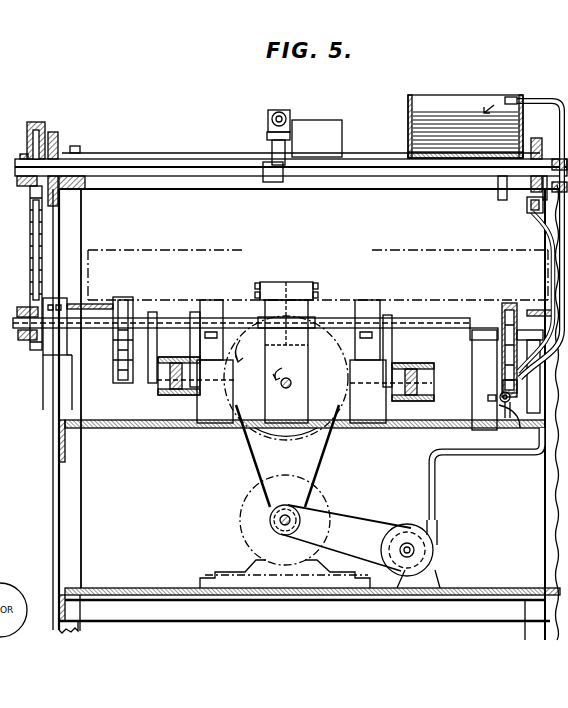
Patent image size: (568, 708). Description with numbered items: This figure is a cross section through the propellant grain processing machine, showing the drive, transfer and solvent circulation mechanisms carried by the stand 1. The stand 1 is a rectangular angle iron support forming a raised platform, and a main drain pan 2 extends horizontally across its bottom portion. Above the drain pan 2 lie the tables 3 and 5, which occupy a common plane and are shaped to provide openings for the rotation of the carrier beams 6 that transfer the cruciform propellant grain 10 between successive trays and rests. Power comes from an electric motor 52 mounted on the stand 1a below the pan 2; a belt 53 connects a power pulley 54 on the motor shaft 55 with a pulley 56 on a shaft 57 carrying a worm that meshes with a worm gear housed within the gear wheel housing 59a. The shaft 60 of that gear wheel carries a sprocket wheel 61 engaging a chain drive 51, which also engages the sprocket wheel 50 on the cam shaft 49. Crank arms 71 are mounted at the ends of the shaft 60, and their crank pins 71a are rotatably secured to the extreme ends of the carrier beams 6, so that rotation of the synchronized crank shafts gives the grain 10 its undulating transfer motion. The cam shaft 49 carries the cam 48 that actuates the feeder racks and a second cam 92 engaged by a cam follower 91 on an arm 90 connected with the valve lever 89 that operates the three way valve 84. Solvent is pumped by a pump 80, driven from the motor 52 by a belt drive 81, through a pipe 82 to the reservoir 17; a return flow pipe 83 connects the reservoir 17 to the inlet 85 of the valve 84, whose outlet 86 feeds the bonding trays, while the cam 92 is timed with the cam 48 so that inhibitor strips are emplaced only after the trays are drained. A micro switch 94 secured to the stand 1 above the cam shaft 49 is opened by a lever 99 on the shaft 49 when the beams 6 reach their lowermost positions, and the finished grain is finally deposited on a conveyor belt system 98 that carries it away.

The stand 1 is at (51, 445).
The stand 1a is at (140, 586).
The main drain pan 2 is at (165, 429).
The table 3 is at (101, 304).
The table 5 is at (536, 309).
The carrier beams 6 is at (183, 357).
The propellant grain 10 is at (383, 263).
The reservoir 17 is at (408, 110).
The cam 48 is at (57, 133).
The shaft 49 is at (143, 164).
The sprocket wheel 50 is at (24, 187).
The chain drive 51 is at (30, 230).
The electric motor 52 is at (250, 497).
The belt 53 is at (249, 452).
The power pulley 54 is at (272, 520).
The motor shaft 55 is at (280, 525).
The pulley 56 is at (282, 434).
The shaft 57 is at (287, 387).
The gear wheel housing 59a is at (303, 281).
The shaft 60 is at (19, 316).
The sprocket wheel 61 is at (22, 341).
The crank arms 71 is at (191, 328).
The crank pins 71a is at (230, 384).
The pump 80 is at (434, 556).
The belt drive 81 is at (335, 521).
The pipe 82 is at (545, 98).
The return flow pipe 83 is at (532, 214).
The three way valve 84 is at (500, 395).
The inlet 85 is at (503, 381).
The outlet 86 is at (488, 399).
The valve lever 89 is at (539, 431).
The arm 90 is at (551, 248).
The cam follower 91 is at (526, 205).
The cam 92 is at (539, 143).
The micro switch 94 is at (315, 120).
The conveyor belt system 98 is at (504, 305).
The lever 99 is at (277, 183).